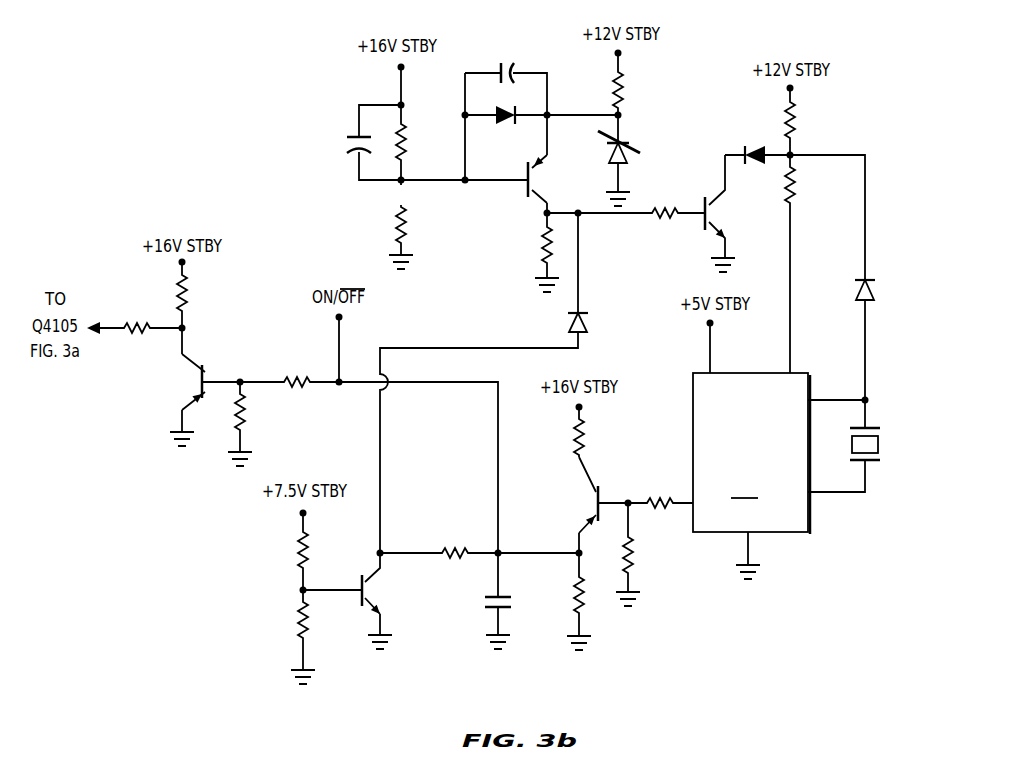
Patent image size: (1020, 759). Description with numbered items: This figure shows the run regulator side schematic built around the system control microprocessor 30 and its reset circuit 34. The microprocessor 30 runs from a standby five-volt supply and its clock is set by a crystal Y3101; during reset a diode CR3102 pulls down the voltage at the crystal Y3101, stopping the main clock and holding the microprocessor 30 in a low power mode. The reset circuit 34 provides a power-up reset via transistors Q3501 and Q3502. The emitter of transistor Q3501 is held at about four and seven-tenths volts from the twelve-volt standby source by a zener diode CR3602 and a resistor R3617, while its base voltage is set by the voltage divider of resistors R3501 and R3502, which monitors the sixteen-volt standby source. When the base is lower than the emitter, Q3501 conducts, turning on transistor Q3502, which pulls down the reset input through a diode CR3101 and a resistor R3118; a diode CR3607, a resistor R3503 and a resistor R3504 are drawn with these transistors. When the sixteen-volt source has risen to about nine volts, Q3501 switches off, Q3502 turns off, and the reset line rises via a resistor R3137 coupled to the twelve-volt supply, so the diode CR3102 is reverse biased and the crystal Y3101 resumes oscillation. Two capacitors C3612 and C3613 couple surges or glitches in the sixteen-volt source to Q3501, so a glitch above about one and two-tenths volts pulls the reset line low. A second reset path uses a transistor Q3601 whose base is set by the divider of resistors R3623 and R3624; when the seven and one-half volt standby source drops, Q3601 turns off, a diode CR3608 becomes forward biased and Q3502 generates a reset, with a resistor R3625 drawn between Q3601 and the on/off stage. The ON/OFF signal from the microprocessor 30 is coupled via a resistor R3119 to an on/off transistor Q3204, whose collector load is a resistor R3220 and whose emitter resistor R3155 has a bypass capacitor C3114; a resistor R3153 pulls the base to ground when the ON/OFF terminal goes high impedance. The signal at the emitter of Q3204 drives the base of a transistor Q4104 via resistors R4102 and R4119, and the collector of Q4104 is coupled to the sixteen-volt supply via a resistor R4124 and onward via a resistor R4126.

The system control microprocessor 30 is at (800, 533).
The reset circuit 34 is at (455, 320).
The resistor R3501 is at (425, 145).
The resistor R3502 is at (424, 222).
The capacitor C3612 is at (331, 149).
The capacitor C3613 is at (505, 47).
The diode CR3607 is at (503, 134).
The transistor Q3501 is at (562, 179).
The resistor R3617 is at (645, 89).
The zener diode CR3602 is at (649, 166).
The resistor R3503 is at (518, 246).
The resistor R3504 is at (659, 242).
The transistor Q3502 is at (735, 206).
The diode CR3101 is at (736, 140).
The resistor R3137 is at (820, 125).
The resistor R3118 is at (817, 190).
The diode CR3102 is at (836, 307).
The crystal Y3101 is at (860, 483).
The resistor R3119 is at (656, 476).
The resistor R3153 is at (651, 556).
The diode CR3608 is at (545, 323).
The resistor R4124 is at (208, 296).
The resistor R4126 is at (133, 303).
The transistor Q4104 is at (170, 382).
The resistor R4102 is at (295, 356).
The resistor R4119 is at (267, 415).
The resistor R3623 is at (274, 557).
The resistor R3624 is at (275, 621).
The transistor Q3601 is at (391, 583).
The resistor R3625 is at (450, 528).
The bypass capacitor C3114 is at (471, 603).
The emitter resistor R3155 is at (550, 600).
The resistor R3220 is at (552, 441).
The on/off transistor Q3204 is at (566, 495).